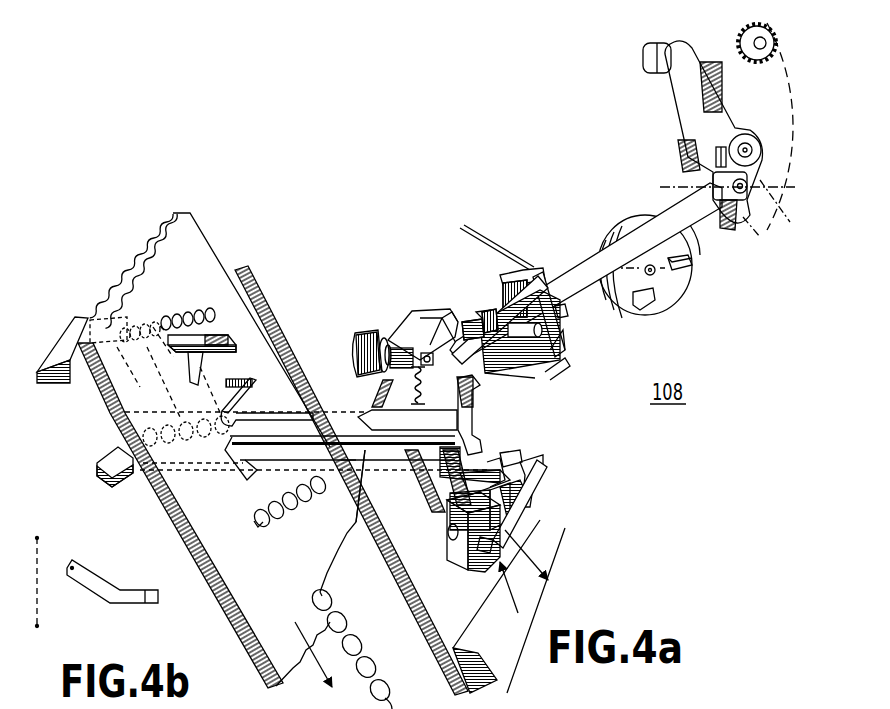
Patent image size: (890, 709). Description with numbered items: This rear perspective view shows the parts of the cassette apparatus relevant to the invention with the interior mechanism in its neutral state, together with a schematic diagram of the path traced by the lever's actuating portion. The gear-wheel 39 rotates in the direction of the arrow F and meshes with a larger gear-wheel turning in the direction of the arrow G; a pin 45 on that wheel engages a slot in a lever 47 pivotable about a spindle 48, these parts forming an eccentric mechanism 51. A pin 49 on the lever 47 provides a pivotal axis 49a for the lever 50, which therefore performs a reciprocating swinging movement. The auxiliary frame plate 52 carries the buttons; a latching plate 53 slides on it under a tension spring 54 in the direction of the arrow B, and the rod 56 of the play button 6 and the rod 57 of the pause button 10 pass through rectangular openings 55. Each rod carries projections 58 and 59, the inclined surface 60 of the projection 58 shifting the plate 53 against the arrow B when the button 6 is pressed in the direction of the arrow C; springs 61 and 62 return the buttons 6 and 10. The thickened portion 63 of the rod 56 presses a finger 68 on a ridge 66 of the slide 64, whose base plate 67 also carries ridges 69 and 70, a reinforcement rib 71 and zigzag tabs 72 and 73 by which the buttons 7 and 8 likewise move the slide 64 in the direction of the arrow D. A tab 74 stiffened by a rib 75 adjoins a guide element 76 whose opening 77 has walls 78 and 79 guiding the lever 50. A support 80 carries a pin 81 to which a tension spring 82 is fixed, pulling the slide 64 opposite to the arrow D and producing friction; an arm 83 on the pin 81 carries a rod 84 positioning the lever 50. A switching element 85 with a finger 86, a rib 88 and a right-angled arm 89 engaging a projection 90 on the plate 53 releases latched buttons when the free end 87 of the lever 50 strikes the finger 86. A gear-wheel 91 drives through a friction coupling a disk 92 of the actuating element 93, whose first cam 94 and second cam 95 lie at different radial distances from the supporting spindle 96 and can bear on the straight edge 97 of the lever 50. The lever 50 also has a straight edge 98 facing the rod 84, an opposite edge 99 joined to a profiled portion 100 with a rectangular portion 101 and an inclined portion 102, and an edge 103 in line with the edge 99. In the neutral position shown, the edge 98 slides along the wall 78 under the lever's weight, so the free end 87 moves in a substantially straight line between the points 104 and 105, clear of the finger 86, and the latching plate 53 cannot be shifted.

In FIG. 4a, the play button 6 is at (124, 487).
In FIG. 4a, the actuating button 7 is at (448, 534).
In FIG. 4a, the actuating button 8 is at (513, 432).
In FIG. 4a, the pause button 10 is at (60, 383).
In FIG. 4a, the gear-wheel 39 is at (738, 48).
In FIG. 4a, the pin 45 is at (716, 153).
In FIG. 4a, the lever 47 is at (680, 88).
In FIG. 4a, the spindle 48 is at (644, 52).
In FIG. 4a, the pin 49 is at (748, 178).
In FIG. 4a, the pivotal axis 49a is at (766, 221).
In FIG. 4a, the lever 50 is at (596, 268).
In FIG. 4a, the eccentric mechanism 51 is at (677, 162).
In FIG. 4a, the auxiliary frame plate 52 is at (445, 640).
In FIG. 4a, the latching plate 53 is at (322, 565).
In FIG. 4a, the tension spring 54 is at (392, 700).
In FIG. 4a, the rectangular openings 55 is at (270, 480).
In FIG. 4a, the rod 56 is at (282, 462).
In FIG. 4a, the rod 57 is at (222, 336).
In FIG. 4a, the projection 58 is at (204, 422).
In FIG. 4a, the projection 59 is at (168, 424).
In FIG. 4a, the inclined surface 60 is at (215, 447).
In FIG. 4a, the spring 61 is at (292, 508).
In FIG. 4a, the spring 62 is at (191, 316).
In FIG. 4a, the thickened portion 63 is at (341, 462).
In FIG. 4a, the slide 64 is at (509, 606).
In FIG. 4a, the ridge 66 is at (530, 492).
In FIG. 4a, the base plate 67 is at (505, 398).
In FIG. 4a, the finger 68 is at (515, 412).
In FIG. 4a, the ridge 69 is at (524, 571).
In FIG. 4a, the ridge 70 is at (526, 480).
In FIG. 4a, the reinforcement rib 71 is at (534, 512).
In FIG. 4a, the tab 72 is at (455, 572).
In FIG. 4a, the tab 73 is at (545, 462).
In FIG. 4a, the tab 74 is at (545, 357).
In FIG. 4a, the rib 75 is at (566, 364).
In FIG. 4a, the guide element 76 is at (533, 258).
In FIG. 4a, the opening 77 is at (542, 274).
In FIG. 4a, the wall 78 is at (566, 317).
In FIG. 4a, the wall 79 is at (514, 280).
In FIG. 4a, the support 80 is at (362, 345).
In FIG. 4a, the pin 81 is at (432, 366).
In FIG. 4a, the tension spring 82 is at (411, 386).
In FIG. 4a, the arm 83 is at (386, 332).
In FIG. 4a, the rod 84 is at (542, 336).
In FIG. 4a, the switching element 85 is at (366, 404).
In FIG. 4a, the finger 86 is at (476, 389).
In FIG. 4b, the finger 86 is at (76, 568).
In FIG. 4a, the free end 87 is at (410, 325).
In FIG. 4a, the rib 88 is at (389, 455).
In FIG. 4a, the right-angled arm 89 is at (250, 400).
In FIG. 4a, the projection 90 is at (236, 378).
In FIG. 4a, the gear-wheel 91 is at (622, 330).
In FIG. 4a, the disk 92 is at (684, 308).
In FIG. 4a, the actuating element 93 is at (688, 298).
In FIG. 4a, the first cam 94 is at (655, 312).
In FIG. 4a, the second cam 95 is at (693, 267).
In FIG. 4a, the supporting spindle 96 is at (682, 283).
In FIG. 4a, the edge 97 is at (696, 232).
In FIG. 4a, the straight edge 98 is at (530, 377).
In FIG. 4a, the edge 99 is at (425, 330).
In FIG. 4a, the profiled portion 100 is at (478, 313).
In FIG. 4a, the rectangular portion 101 is at (466, 325).
In FIG. 4a, the inclined portion 102 is at (488, 312).
In FIG. 4a, the edge 103 is at (505, 278).
In FIG. 4b, the point 104 is at (38, 538).
In FIG. 4b, the point 105 is at (38, 626).
In FIG. 4a, the arrow B is at (313, 665).
In FIG. 4a, the arrow C is at (470, 452).
In FIG. 4a, the arrow D is at (535, 532).
In FIG. 4a, the arrow F is at (745, 26).
In FIG. 4a, the arrow G is at (742, 130).